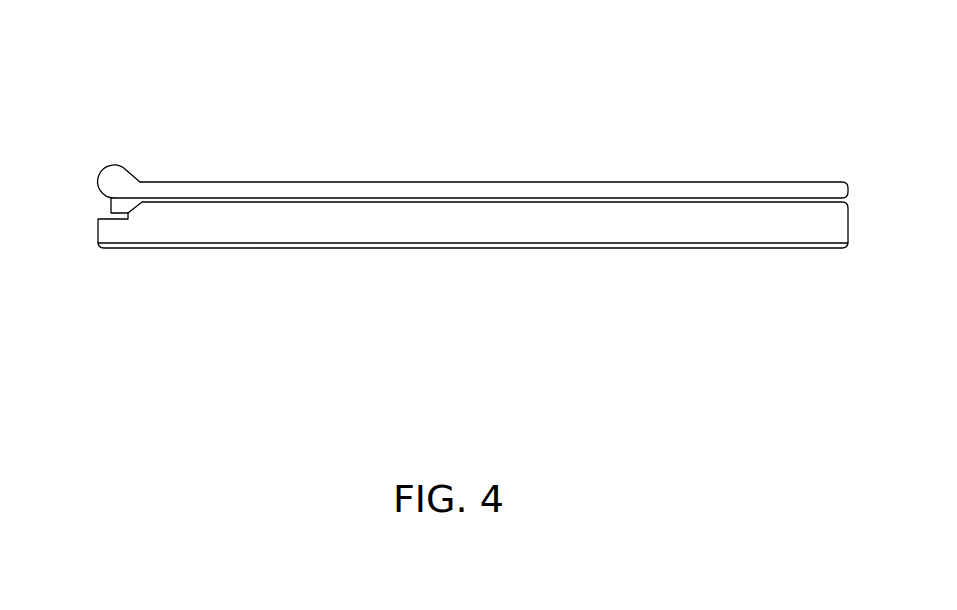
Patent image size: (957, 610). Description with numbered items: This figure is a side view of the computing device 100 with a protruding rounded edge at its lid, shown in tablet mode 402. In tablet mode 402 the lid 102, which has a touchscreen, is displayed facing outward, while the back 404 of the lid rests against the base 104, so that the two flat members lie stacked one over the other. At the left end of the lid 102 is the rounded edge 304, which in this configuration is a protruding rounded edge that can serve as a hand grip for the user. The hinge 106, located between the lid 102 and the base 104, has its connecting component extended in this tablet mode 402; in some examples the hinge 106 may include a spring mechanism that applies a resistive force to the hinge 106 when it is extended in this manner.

The computing device 100 is at (470, 467).
The lid 102 is at (598, 182).
The base 104 is at (608, 230).
The hinge 106 is at (110, 210).
The rounded edge 304 is at (118, 165).
The tablet mode 402 is at (472, 85).
The back of the lid 404 is at (703, 190).